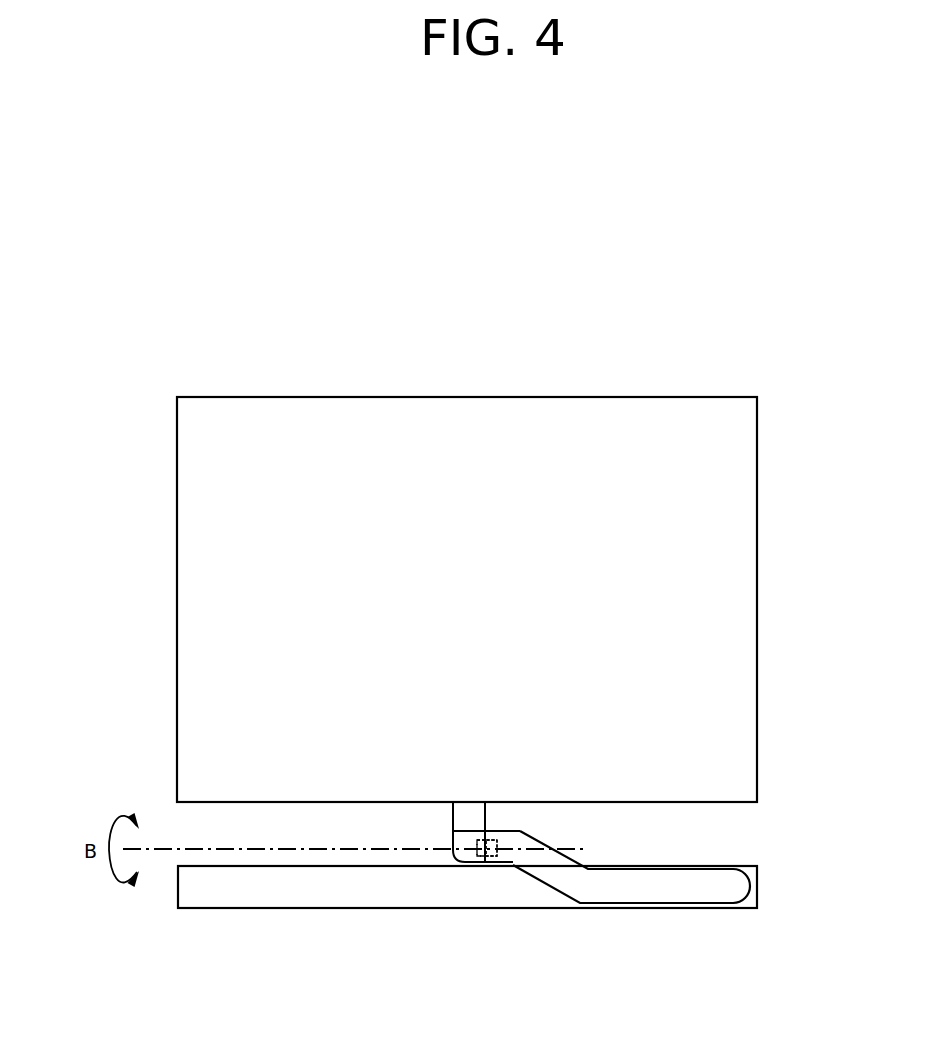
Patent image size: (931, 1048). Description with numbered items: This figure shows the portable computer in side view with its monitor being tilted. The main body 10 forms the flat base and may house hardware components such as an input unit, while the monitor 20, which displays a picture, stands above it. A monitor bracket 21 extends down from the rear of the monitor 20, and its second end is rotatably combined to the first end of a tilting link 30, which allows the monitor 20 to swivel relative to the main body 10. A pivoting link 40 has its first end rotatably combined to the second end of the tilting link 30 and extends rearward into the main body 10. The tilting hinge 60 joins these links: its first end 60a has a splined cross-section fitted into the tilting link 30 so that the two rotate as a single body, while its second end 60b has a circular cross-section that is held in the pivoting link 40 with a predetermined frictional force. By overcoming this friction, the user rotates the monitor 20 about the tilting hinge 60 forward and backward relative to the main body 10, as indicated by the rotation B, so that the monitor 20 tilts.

The main body 10 is at (235, 909).
The monitor 20 is at (752, 637).
The monitor bracket 21 is at (452, 815).
The tilting link 30 is at (463, 855).
The pivoting link 40 is at (679, 893).
The tilting hinge 60 is at (508, 932).
The first end of the tilting hinge 60a is at (483, 856).
The second end of the tilting hinge 60b is at (502, 856).